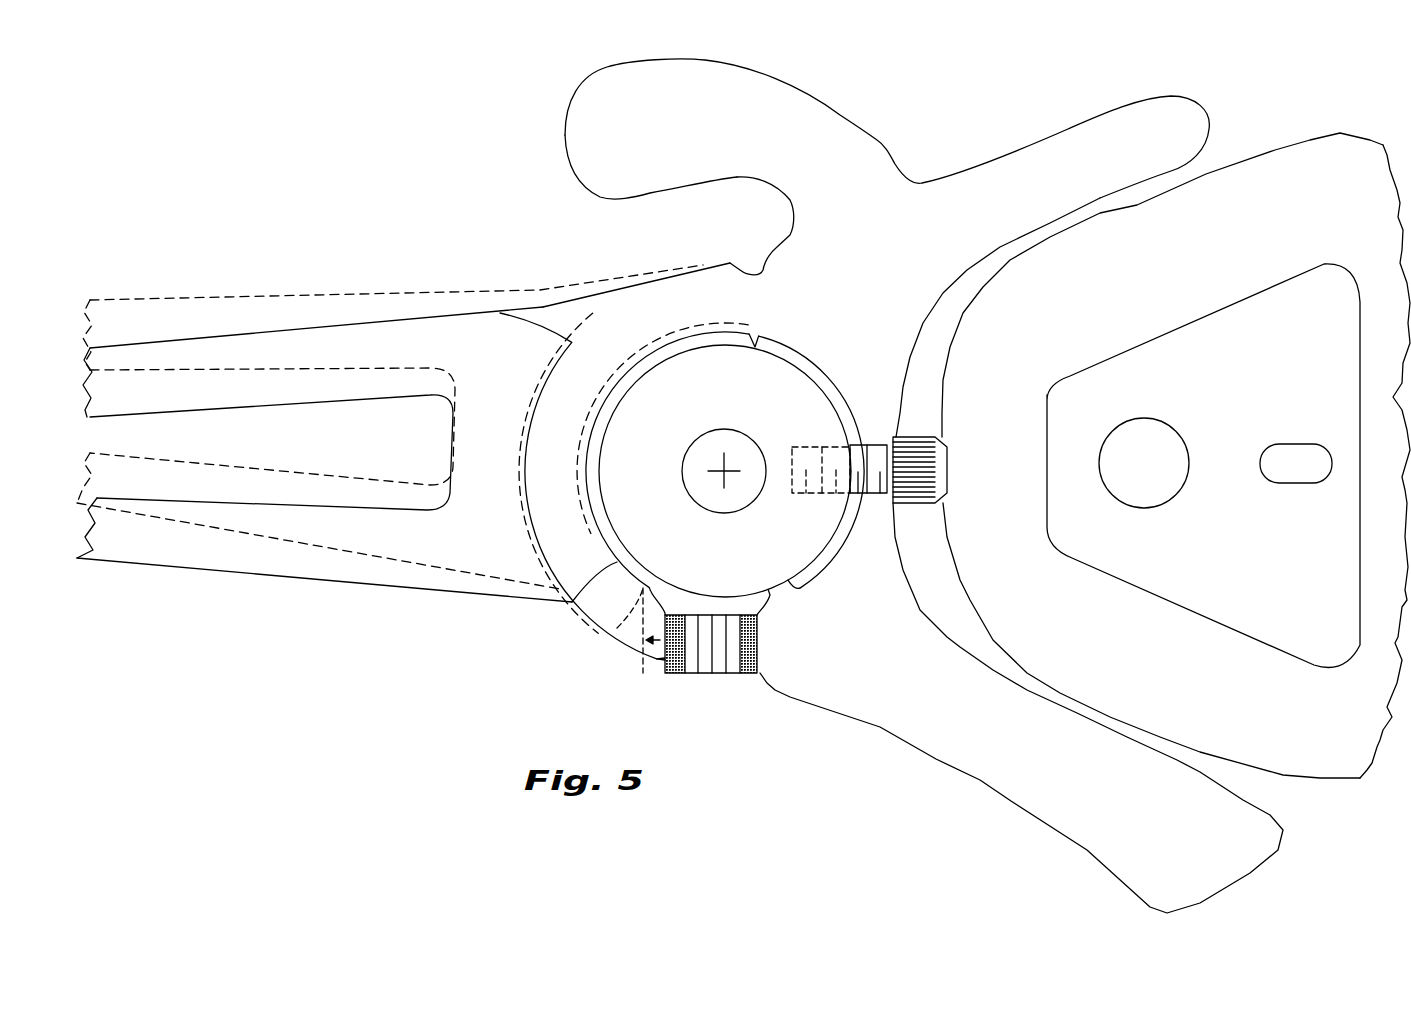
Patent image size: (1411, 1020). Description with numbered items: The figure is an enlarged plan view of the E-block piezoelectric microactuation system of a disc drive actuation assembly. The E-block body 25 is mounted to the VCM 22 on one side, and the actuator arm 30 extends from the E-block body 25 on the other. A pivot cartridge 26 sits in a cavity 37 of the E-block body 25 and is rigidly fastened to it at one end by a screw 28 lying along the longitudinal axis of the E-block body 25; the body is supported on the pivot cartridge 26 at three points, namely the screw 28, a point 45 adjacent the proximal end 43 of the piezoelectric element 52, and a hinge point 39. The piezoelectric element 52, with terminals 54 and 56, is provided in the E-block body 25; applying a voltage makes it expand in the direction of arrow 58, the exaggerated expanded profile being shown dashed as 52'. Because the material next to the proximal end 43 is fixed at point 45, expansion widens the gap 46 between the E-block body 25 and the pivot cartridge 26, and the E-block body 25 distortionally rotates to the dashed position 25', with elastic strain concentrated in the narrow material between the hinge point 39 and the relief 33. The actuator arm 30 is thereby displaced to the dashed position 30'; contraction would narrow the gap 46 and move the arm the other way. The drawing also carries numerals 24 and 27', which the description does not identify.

The VCM 22 is at (1357, 135).
The bearing 24 is at (720, 466).
The E-block body 25 is at (602, 448).
The distorted position of E-block body 25' is at (525, 473).
The pivot cartridge 26 is at (583, 453).
The neck (alternate position) 27' is at (593, 627).
The screw 28 is at (945, 490).
The actuator arm 30 is at (324, 476).
The displaced position of actuator arm 30' is at (390, 459).
The relief 33 is at (755, 262).
The cavity 37 is at (573, 602).
The hinge point 39 is at (758, 343).
The proximal end of piezoelectric element 43 is at (758, 640).
The fastening point 45 is at (797, 588).
The gap 46 is at (603, 407).
The piezoelectric element 52 is at (710, 679).
The expanded profile of piezoelectric element 52' is at (619, 642).
The terminal 54 is at (742, 673).
The terminal 56 is at (675, 675).
The arrow 58 is at (661, 660).